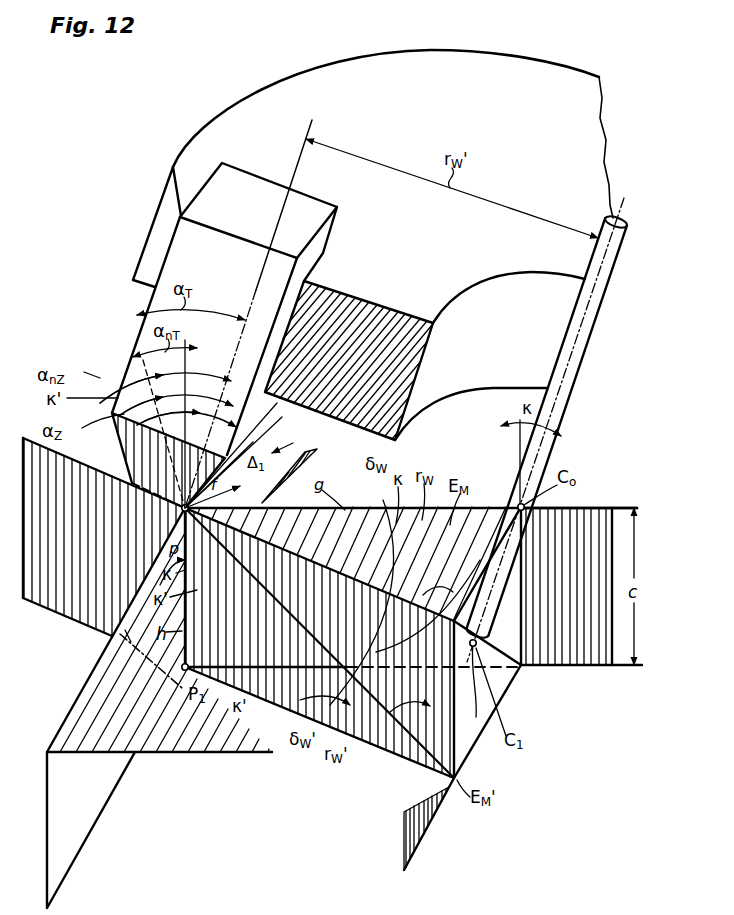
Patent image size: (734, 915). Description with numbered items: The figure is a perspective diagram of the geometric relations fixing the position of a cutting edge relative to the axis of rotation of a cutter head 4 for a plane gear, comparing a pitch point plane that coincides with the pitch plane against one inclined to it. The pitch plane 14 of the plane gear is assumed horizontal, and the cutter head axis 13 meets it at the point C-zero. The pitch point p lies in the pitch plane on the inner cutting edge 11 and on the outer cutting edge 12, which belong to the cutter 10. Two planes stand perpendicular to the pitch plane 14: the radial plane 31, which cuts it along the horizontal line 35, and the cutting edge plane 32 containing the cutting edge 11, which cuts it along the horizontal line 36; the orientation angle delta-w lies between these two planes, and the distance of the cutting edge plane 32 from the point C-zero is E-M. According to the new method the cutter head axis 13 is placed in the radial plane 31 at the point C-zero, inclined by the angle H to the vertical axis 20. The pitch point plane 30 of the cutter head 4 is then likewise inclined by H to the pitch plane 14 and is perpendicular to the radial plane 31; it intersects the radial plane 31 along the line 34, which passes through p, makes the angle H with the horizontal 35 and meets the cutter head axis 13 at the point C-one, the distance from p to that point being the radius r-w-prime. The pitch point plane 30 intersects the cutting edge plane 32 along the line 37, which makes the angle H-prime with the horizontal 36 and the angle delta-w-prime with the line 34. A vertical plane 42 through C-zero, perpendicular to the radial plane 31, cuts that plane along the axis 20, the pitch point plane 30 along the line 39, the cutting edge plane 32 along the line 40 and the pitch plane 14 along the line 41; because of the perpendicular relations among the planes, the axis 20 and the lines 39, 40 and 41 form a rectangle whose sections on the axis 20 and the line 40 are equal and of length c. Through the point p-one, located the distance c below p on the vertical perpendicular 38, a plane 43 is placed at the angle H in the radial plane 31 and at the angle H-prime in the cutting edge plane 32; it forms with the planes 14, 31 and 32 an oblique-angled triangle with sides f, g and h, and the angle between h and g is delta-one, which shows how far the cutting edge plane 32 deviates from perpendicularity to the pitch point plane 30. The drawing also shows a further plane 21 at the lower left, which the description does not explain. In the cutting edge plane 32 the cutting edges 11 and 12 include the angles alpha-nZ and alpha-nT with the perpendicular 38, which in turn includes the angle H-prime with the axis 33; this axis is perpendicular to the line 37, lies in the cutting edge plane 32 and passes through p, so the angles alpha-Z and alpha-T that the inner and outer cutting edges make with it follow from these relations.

The cutter 10 is at (188, 237).
The outer cutting edge 12 is at (112, 300).
The axis 33 is at (299, 161).
The cutter head 4 is at (527, 257).
The cutter head axis 13 is at (590, 338).
The plane 43 is at (305, 462).
The pitch plane 14 is at (441, 523).
The line 41 is at (462, 523).
The radial plane 31 is at (568, 522).
The horizontal line 35 is at (598, 507).
The cutting edge plane 32 is at (71, 608).
The inner cutting edge 11 is at (214, 492).
The horizontal line 36 is at (330, 520).
The working plane 21 is at (79, 693).
The perpendicular 38 is at (181, 668).
The line 37 is at (371, 753).
The line 40 is at (439, 759).
The vertical plane 42 is at (426, 838).
The pitch point plane 30 is at (476, 717).
The line 39 is at (504, 691).
The line 34 is at (517, 679).
The vertical axis 20 is at (523, 646).